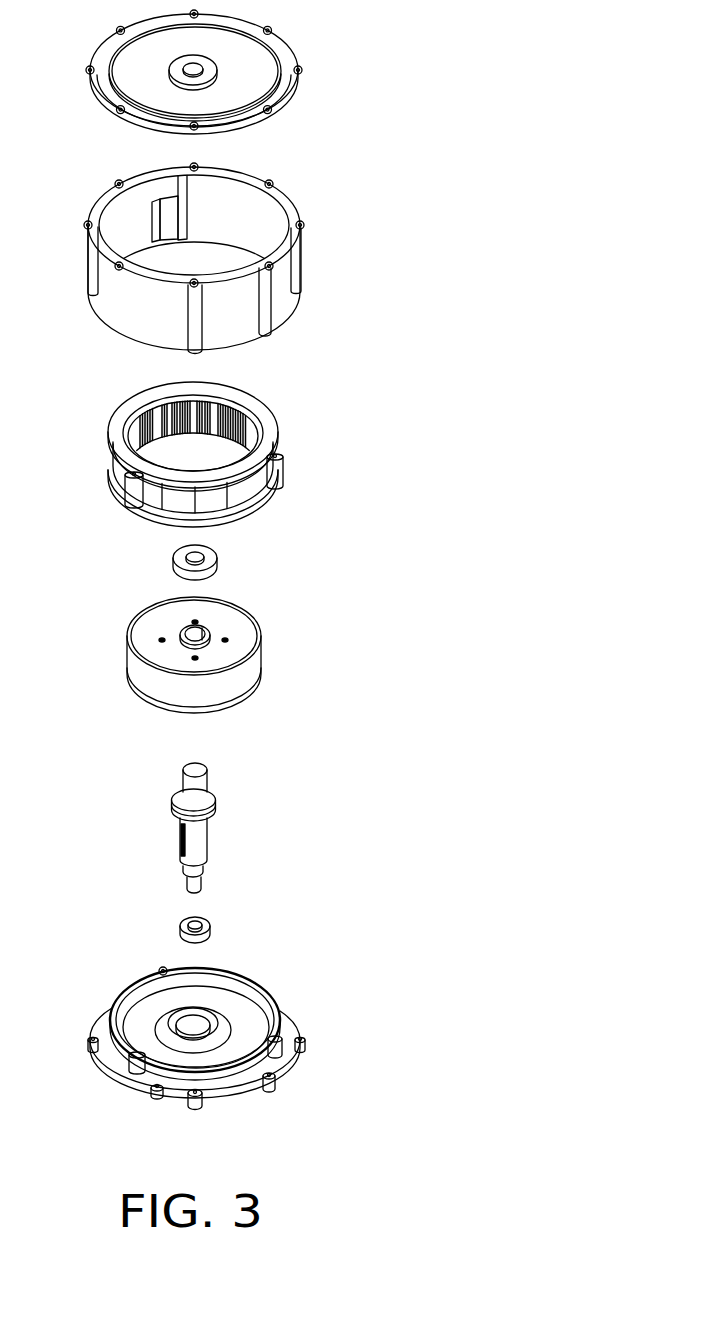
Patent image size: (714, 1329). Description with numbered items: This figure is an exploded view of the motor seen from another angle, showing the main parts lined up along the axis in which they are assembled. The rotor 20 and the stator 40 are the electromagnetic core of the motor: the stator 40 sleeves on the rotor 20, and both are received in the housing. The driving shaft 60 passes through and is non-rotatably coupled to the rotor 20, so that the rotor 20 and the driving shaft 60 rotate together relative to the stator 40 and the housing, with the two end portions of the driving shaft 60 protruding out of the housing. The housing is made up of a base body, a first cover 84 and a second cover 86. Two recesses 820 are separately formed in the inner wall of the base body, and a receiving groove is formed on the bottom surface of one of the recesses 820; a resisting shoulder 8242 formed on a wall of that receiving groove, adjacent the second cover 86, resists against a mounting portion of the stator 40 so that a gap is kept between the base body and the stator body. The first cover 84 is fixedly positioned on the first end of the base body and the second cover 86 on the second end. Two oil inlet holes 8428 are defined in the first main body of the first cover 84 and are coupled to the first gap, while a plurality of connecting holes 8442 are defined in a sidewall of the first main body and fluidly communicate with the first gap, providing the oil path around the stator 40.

The second cover 86 is at (265, 62).
The recess 820 is at (268, 218).
The resisting shoulder 8242 is at (163, 207).
The stator 40 is at (260, 412).
The rotor 20 is at (243, 637).
The driving shaft 60 is at (198, 843).
The first cover 84 is at (275, 1062).
The connecting hole 8442 is at (250, 995).
The oil inlet hole 8428 is at (153, 1087).